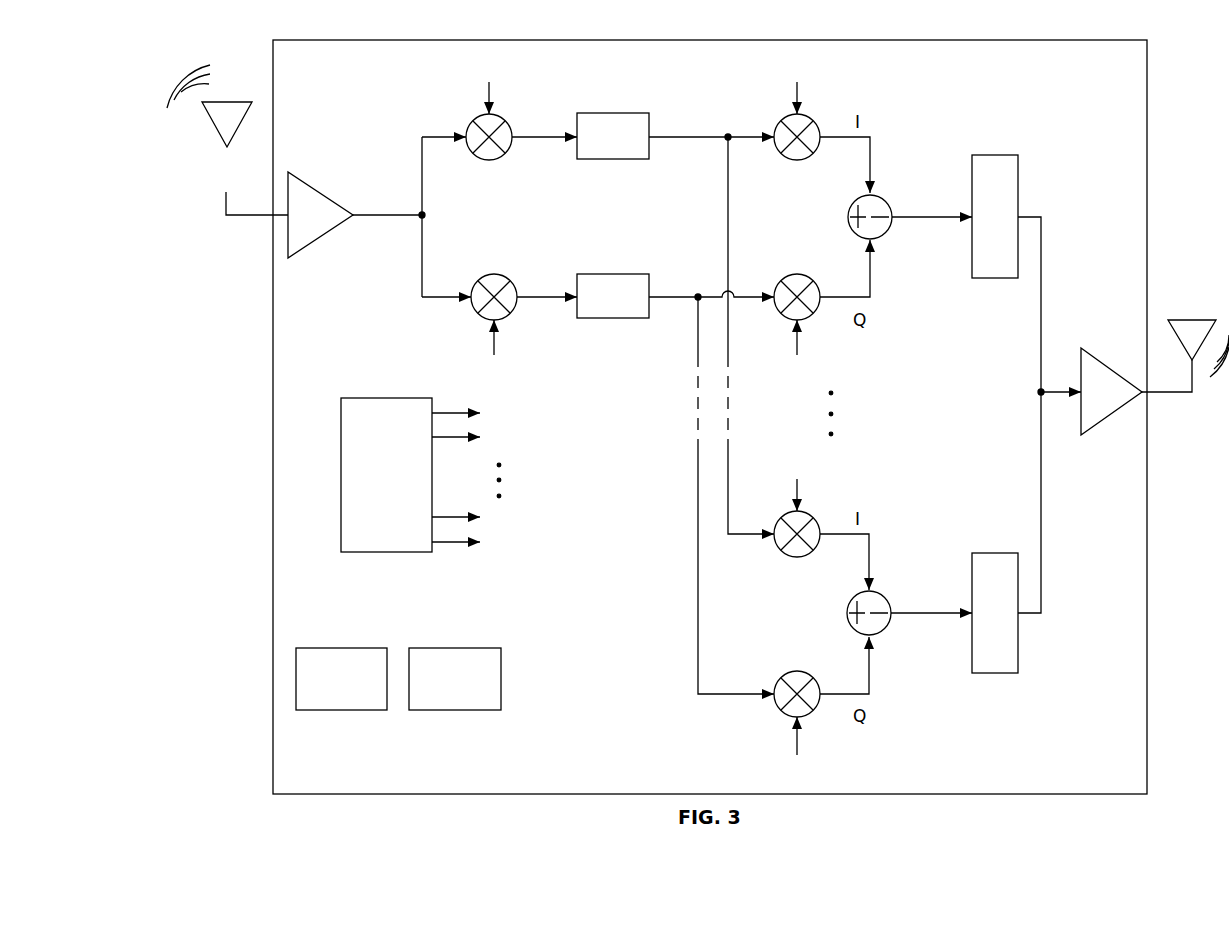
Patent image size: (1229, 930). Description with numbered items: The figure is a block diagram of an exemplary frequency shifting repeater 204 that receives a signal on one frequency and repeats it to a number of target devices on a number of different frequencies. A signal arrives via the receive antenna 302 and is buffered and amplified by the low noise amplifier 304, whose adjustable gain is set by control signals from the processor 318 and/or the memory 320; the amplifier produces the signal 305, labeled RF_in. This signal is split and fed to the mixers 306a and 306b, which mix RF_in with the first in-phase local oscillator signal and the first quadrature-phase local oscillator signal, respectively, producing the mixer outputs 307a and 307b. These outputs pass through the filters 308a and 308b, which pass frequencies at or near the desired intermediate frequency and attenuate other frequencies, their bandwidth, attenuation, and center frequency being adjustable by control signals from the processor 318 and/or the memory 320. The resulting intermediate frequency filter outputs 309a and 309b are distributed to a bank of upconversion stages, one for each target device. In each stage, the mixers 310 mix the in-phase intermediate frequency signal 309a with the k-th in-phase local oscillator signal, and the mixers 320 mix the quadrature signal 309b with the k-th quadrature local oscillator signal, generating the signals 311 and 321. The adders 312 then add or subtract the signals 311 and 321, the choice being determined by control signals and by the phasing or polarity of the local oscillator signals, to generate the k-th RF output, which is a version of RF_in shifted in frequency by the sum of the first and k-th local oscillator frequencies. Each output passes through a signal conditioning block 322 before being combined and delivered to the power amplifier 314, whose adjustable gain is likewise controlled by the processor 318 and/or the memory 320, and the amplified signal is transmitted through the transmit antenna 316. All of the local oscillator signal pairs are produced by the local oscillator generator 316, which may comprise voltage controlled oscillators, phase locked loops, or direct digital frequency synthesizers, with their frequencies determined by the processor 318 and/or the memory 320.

The repeater 204 is at (357, 40).
The antenna 302 is at (244, 102).
The low noise amplifier 304 is at (318, 188).
The signal output by the LNA 305 is at (386, 214).
The mixer 306a is at (488, 160).
The mixer 306b is at (494, 273).
The I mixer output signal 307a is at (551, 139).
The Q mixer output signal 307b is at (557, 296).
The filter 308a is at (612, 160).
The filter 308b is at (628, 260).
The filter output 309a is at (688, 139).
The filter output 309b is at (665, 297).
The mixers 310 is at (796, 160).
The signal 311 is at (871, 157).
The adders 312 is at (849, 224).
The power amplifier 314 is at (1128, 357).
The local oscillator generator 316 is at (1192, 320).
The processor 318 is at (340, 648).
The mixers 320 is at (796, 273).
The signal 321 is at (871, 271).
The signal conditioning blocks 322 is at (998, 155).